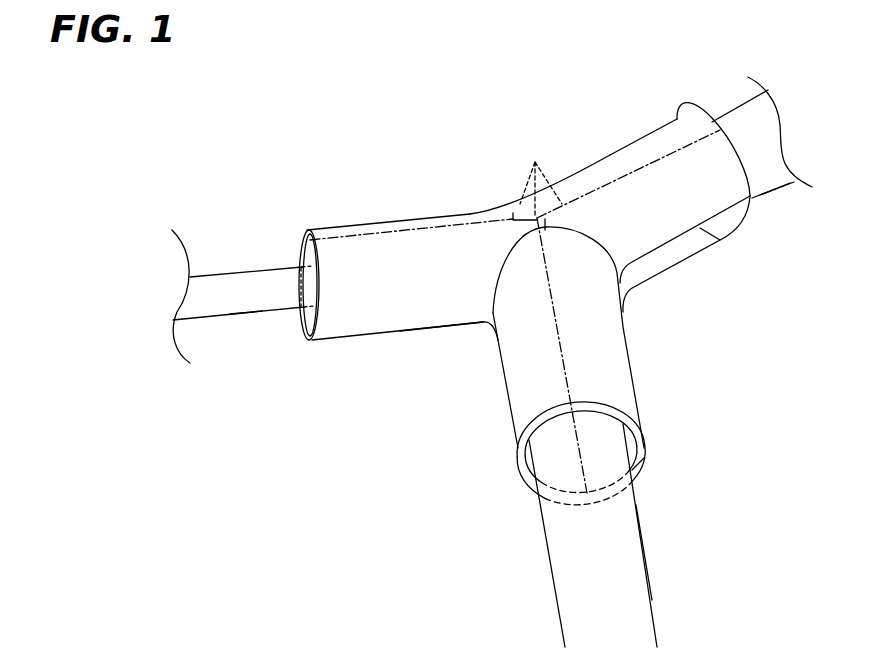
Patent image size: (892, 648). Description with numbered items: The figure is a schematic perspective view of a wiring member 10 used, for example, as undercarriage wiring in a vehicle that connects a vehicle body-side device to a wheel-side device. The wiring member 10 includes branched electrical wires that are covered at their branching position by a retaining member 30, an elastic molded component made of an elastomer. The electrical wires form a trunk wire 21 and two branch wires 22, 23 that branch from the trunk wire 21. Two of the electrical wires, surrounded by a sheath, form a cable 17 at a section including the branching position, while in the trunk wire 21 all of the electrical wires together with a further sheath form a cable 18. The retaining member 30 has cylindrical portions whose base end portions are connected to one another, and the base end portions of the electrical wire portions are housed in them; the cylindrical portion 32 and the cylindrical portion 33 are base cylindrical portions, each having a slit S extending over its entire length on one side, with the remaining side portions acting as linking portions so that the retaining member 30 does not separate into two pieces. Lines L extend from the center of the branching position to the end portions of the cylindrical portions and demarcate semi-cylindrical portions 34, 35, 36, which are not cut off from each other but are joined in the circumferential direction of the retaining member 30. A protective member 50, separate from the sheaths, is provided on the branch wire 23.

The wiring member 10 is at (262, 116).
The cable 17 is at (243, 274).
The cable 18 is at (740, 110).
The trunk wire 21 is at (776, 199).
The branch wire 22 is at (248, 318).
The branch wire 23 is at (654, 573).
The retaining member 30 is at (620, 150).
The cylindrical portion 32 is at (357, 222).
The cylindrical portion 33 is at (507, 378).
The semi-cylindrical portion 34 is at (428, 320).
The semi-cylindrical portion 35 is at (446, 215).
The semi-cylindrical portion 36 is at (670, 266).
The protective member 50 is at (638, 607).
The line L is at (553, 315).
The slit S is at (710, 220).